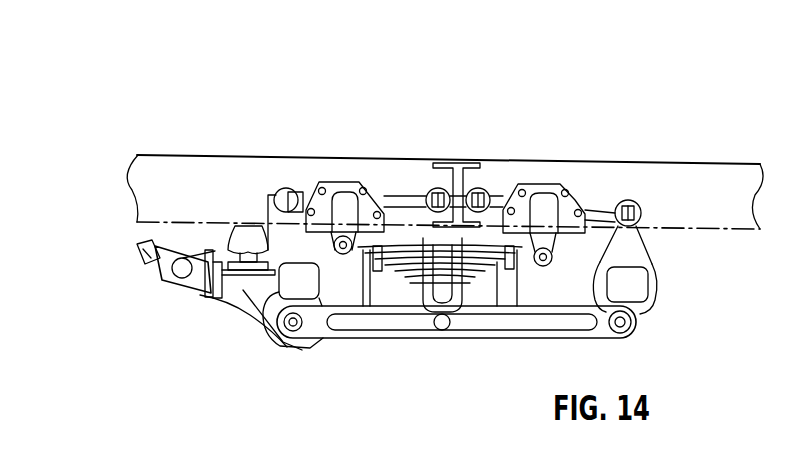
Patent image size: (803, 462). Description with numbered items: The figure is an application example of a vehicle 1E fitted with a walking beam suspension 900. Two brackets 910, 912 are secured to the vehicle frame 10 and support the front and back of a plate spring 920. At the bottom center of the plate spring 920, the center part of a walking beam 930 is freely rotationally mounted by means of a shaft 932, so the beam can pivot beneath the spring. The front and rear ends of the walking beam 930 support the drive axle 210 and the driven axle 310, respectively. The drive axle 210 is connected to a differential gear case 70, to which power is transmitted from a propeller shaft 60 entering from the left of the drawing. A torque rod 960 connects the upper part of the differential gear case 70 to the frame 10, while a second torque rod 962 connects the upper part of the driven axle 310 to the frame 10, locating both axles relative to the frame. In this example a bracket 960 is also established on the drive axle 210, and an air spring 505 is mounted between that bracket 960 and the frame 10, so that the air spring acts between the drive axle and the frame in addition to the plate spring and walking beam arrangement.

The vehicle frame 10 is at (697, 193).
The vehicle 1E is at (677, 100).
The suspension 900 is at (460, 138).
The propeller shaft 60 is at (140, 247).
The differential gear case 70 is at (223, 256).
The air spring 505 is at (238, 227).
The drive axle 210 is at (247, 278).
The bracket 910 is at (342, 198).
The bracket 912 is at (545, 205).
The torque rod 960 is at (408, 197).
The torque rod 962 is at (598, 210).
The plate spring 920 is at (478, 270).
The walking beam 930 is at (400, 322).
The shaft 932 is at (443, 330).
The driven axle 310 is at (648, 318).